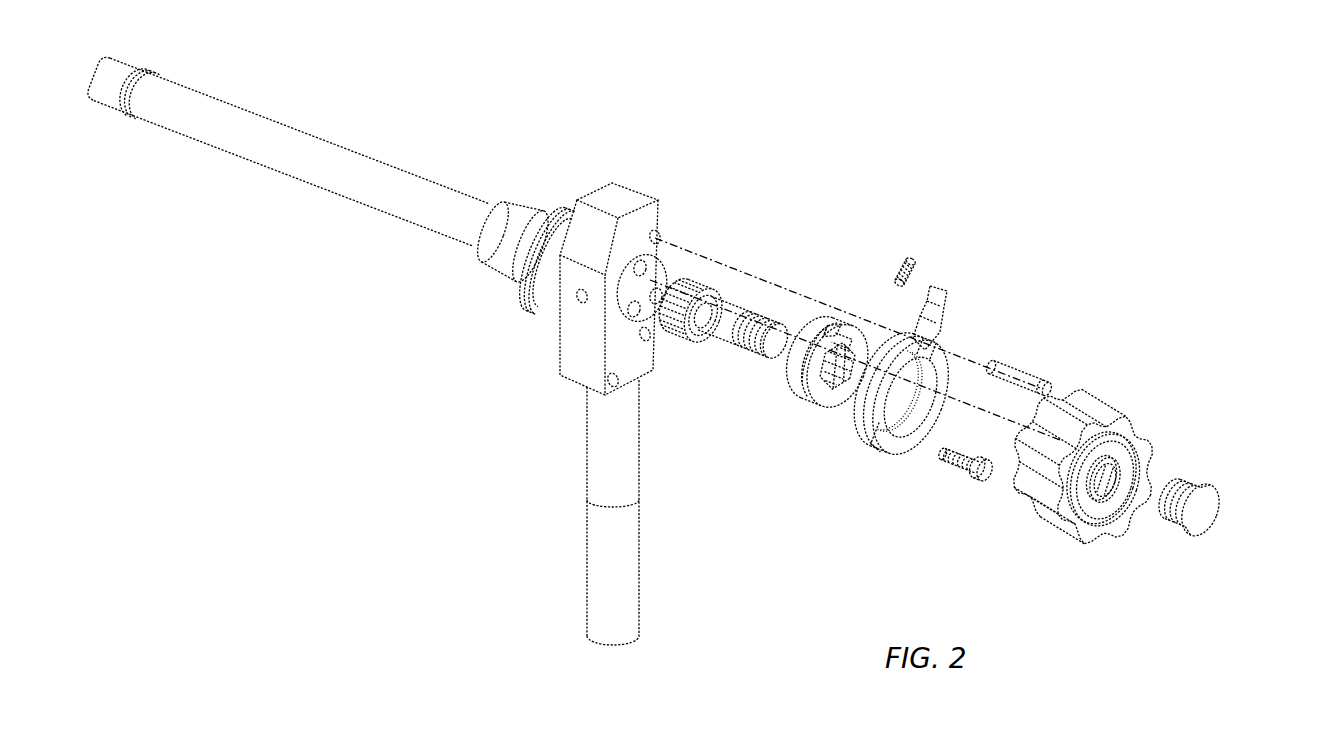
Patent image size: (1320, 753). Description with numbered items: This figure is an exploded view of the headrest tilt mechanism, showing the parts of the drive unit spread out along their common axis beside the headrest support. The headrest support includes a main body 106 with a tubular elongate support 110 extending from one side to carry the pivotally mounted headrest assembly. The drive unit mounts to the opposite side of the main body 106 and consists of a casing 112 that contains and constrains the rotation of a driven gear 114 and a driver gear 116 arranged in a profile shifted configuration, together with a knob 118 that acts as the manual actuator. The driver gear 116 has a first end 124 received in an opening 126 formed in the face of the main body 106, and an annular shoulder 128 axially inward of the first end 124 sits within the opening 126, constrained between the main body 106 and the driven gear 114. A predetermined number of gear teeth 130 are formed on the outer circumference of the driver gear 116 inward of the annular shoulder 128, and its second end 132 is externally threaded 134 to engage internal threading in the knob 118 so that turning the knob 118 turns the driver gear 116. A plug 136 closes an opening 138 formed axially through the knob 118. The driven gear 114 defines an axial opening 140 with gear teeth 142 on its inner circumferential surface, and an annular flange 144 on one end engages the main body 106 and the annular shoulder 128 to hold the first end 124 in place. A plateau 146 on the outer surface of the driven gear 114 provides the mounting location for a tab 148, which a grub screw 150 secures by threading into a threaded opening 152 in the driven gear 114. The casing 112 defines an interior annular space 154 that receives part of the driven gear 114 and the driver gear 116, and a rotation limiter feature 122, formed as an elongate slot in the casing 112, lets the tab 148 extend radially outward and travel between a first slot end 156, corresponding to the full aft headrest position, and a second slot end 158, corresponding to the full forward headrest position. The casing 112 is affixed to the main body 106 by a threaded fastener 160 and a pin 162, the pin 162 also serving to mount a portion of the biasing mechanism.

The main body 106 is at (658, 202).
The elongate support 110 is at (467, 195).
The casing 112 is at (880, 440).
The driven gear 114 is at (810, 400).
The driver gear 116 is at (723, 320).
The knob 118 is at (1143, 413).
The rotation limiter feature 122 is at (909, 367).
The first end 124 is at (680, 284).
The opening 126 is at (630, 297).
The annular shoulder 128 is at (672, 338).
The gear teeth 130 is at (720, 297).
The second end 132 is at (775, 317).
The external threading 134 is at (752, 347).
The plug 136 is at (1210, 490).
The opening 138 is at (1096, 478).
The axial opening 140 is at (835, 357).
The gear teeth 142 is at (840, 383).
The annular flange 144 is at (813, 390).
The plateau 146 is at (815, 333).
The tab 148 is at (943, 292).
The grub screw 150 is at (908, 263).
The threaded opening 152 is at (816, 332).
The interior annular space 154 is at (907, 405).
The first slot end 156 is at (893, 385).
The second slot end 158 is at (928, 351).
The threaded fastener 160 is at (978, 480).
The pin 162 is at (1045, 378).